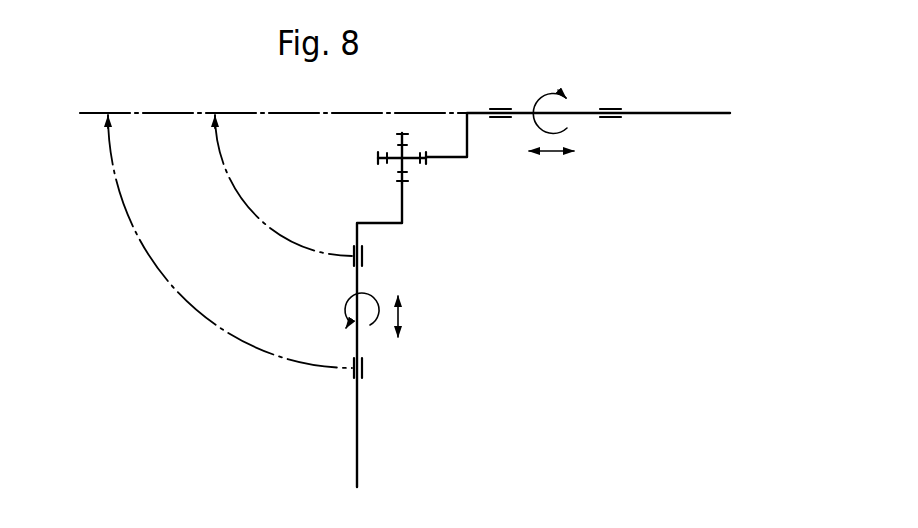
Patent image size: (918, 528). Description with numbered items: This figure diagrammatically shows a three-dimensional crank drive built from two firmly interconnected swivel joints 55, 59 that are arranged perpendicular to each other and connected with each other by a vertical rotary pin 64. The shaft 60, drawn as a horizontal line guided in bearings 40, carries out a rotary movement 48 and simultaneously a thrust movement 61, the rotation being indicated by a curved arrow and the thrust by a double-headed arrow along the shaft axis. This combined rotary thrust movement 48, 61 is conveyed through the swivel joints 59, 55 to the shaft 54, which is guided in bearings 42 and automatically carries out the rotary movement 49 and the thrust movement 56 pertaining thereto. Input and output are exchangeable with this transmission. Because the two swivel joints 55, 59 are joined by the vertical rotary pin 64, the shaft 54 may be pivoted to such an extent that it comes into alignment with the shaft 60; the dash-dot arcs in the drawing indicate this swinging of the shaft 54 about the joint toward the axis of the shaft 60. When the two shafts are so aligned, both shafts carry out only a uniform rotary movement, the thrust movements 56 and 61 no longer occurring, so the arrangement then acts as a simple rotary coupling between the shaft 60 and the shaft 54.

The bearing 40 is at (500, 107).
The bearing 42 is at (366, 256).
The rotary movement 48 is at (559, 92).
The rotary movement 49 is at (340, 309).
The shaft 54 is at (360, 441).
The swivel joint 55 is at (397, 138).
The thrust movement 56 is at (400, 316).
The swivel joint 59 is at (392, 164).
The shaft 60 is at (678, 115).
The thrust movement 61 is at (551, 153).
The vertical rotary pin 64 is at (407, 164).